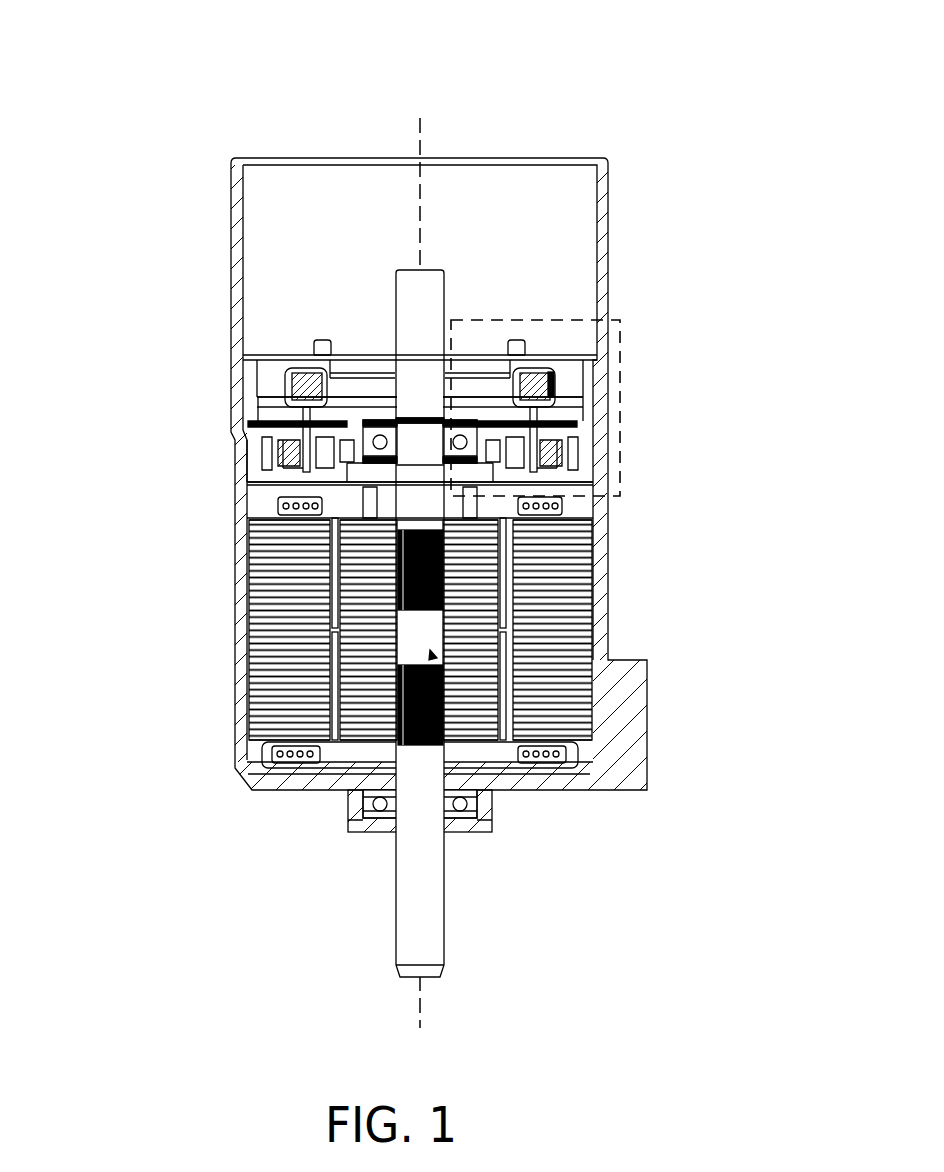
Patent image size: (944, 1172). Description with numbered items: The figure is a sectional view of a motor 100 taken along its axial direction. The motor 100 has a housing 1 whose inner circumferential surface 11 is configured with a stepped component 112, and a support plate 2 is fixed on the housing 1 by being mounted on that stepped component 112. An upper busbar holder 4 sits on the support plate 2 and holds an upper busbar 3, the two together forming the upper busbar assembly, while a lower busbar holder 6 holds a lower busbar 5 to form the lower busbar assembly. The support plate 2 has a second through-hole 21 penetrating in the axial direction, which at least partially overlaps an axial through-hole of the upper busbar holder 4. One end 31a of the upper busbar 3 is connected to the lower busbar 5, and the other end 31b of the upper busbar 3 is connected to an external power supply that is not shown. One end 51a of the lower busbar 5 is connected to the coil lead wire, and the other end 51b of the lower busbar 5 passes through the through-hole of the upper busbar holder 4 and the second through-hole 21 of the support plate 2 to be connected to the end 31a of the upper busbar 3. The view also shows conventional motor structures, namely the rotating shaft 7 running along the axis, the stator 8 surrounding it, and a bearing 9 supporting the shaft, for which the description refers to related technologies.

The motor 100 is at (384, 34).
The housing 1 is at (222, 243).
The support plate 2 is at (247, 425).
The second through-hole 21 is at (262, 415).
The upper busbar 3 is at (302, 380).
The upper busbar holder 4 is at (257, 397).
The stepped component 112 is at (247, 466).
The inner circumferential surface 11 is at (258, 487).
The lower busbar holder 6 is at (255, 497).
The lower busbar 5 is at (245, 557).
The rotating shaft 7 is at (597, 565).
The stator 8 is at (593, 642).
The bearing 9 is at (462, 440).
The one end of the upper busbar 31a is at (531, 383).
The other end of the upper busbar 31b is at (517, 352).
The one end of the lower busbar 51a is at (567, 488).
The other end of the lower busbar 51b is at (537, 400).